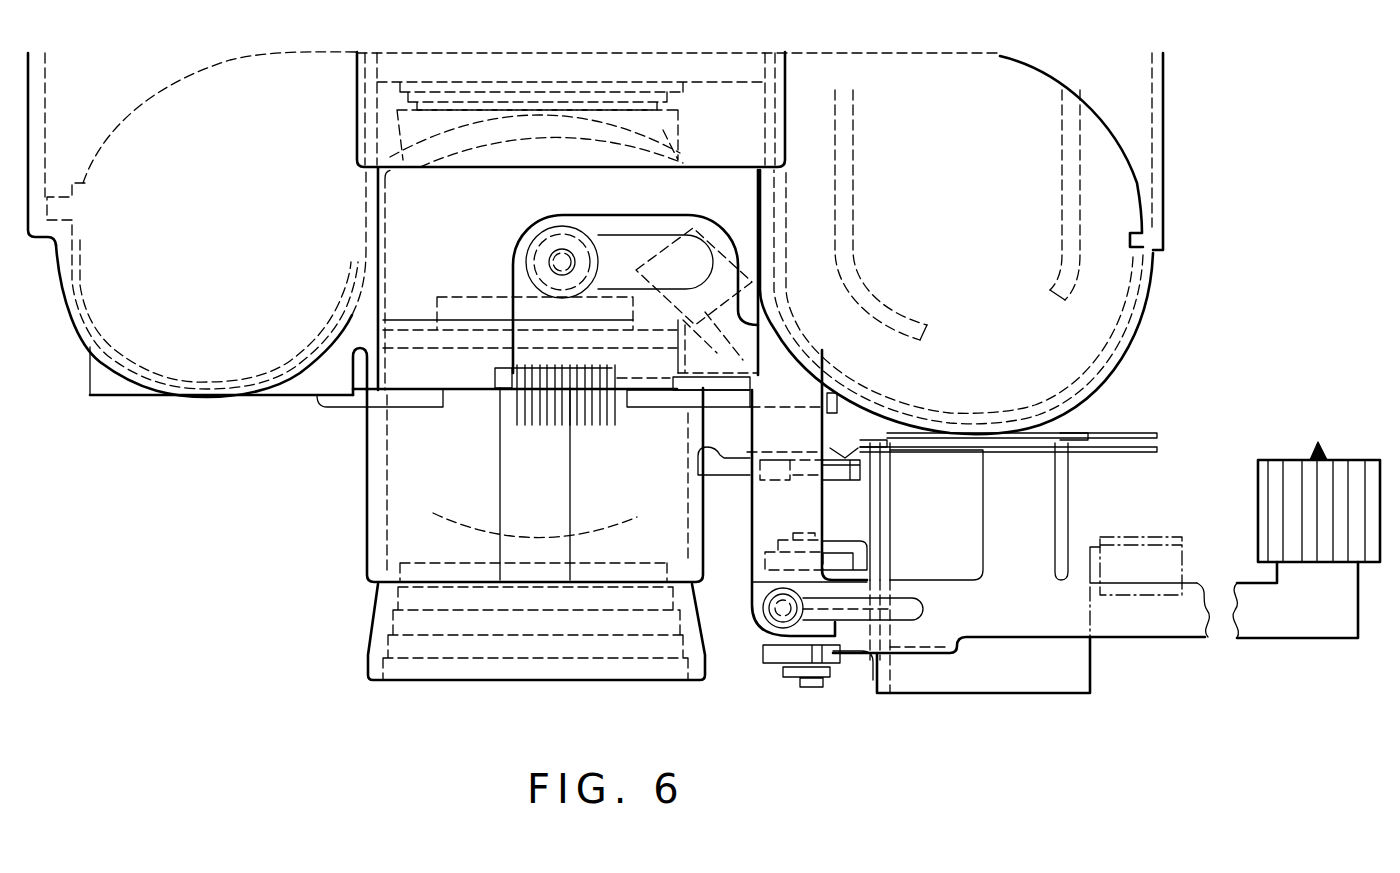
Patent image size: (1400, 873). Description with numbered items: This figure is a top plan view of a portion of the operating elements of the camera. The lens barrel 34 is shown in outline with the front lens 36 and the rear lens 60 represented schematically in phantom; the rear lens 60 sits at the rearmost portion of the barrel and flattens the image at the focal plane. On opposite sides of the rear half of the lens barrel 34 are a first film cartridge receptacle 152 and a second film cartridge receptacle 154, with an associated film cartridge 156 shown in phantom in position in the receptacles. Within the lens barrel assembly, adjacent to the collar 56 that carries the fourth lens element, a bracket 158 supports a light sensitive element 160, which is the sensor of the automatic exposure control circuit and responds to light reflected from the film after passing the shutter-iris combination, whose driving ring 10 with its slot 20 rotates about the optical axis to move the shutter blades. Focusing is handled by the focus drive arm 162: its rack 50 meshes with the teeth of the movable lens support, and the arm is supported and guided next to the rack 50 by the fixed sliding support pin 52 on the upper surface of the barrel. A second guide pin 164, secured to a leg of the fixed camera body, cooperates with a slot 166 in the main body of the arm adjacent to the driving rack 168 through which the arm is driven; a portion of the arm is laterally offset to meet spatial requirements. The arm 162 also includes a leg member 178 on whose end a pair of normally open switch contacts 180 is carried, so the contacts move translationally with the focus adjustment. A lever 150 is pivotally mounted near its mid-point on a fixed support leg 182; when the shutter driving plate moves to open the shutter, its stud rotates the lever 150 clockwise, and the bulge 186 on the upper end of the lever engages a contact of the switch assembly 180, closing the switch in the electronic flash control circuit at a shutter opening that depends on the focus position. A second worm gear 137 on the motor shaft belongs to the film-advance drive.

The driving ring 10 is at (1223, 430).
The slot 20 is at (1259, 479).
The lens barrel housing member 34 is at (367, 477).
The first fixed lens element 36 is at (490, 533).
The focusing rack member 50 is at (617, 407).
The fixed sliding support pin 52 is at (537, 240).
The collar 56 is at (480, 297).
The fifth lens element 60 is at (672, 130).
The second worm gear 137 is at (1150, 537).
The lever 150 is at (727, 477).
The first film cartridge receptacle 152 is at (88, 348).
The second film cartridge receptacle 154 is at (1137, 303).
The film cartridge 156 is at (356, 52).
The bracket 158 is at (730, 253).
The light sensitive element 160 is at (708, 208).
The focus drive arm 162 is at (1190, 640).
The second guide pin 164 is at (778, 625).
The slot 166 is at (890, 620).
The driving rack 168 is at (943, 660).
The leg member 178 is at (983, 520).
The switch contacts 180 is at (910, 453).
The fixed support leg 182 is at (797, 452).
The bulge 186 is at (703, 450).